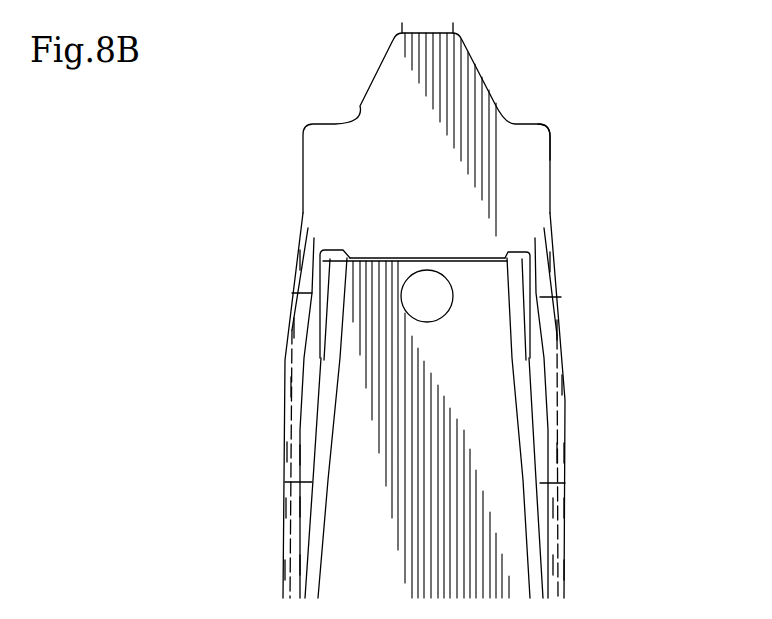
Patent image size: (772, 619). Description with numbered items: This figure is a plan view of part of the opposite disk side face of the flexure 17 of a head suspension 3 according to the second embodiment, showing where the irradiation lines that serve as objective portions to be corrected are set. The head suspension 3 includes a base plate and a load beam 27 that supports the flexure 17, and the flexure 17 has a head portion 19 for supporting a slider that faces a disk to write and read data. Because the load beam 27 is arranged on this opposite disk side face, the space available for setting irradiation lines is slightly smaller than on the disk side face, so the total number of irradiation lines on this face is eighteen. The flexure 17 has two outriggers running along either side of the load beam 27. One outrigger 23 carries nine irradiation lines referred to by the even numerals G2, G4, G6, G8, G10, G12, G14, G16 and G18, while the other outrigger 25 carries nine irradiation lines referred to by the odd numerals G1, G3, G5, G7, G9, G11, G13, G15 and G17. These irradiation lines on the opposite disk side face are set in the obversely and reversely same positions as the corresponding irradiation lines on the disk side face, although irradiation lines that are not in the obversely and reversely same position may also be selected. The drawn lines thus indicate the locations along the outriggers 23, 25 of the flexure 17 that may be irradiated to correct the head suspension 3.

The head suspension 3 is at (538, 124).
The flexure 17 is at (547, 133).
The head portion 19 is at (427, 266).
The outrigger 23 is at (567, 357).
The outrigger 25 is at (286, 354).
The load beam 27 is at (472, 258).
The irradiation line G1 is at (297, 565).
The irradiation line G2 is at (553, 565).
The irradiation line G3 is at (287, 570).
The irradiation line G4 is at (565, 570).
The irradiation line G5 is at (287, 508).
The irradiation line G6 is at (565, 508).
The irradiation line G7 is at (297, 507).
The irradiation line G8 is at (553, 508).
The irradiation line G9 is at (297, 455).
The irradiation line G10 is at (557, 453).
The irradiation line G11 is at (287, 452).
The irradiation line G12 is at (565, 453).
The irradiation line G13 is at (292, 387).
The irradiation line G14 is at (563, 385).
The irradiation line G15 is at (295, 328).
The irradiation line G16 is at (555, 330).
The irradiation line G17 is at (305, 260).
The irradiation line G18 is at (547, 262).